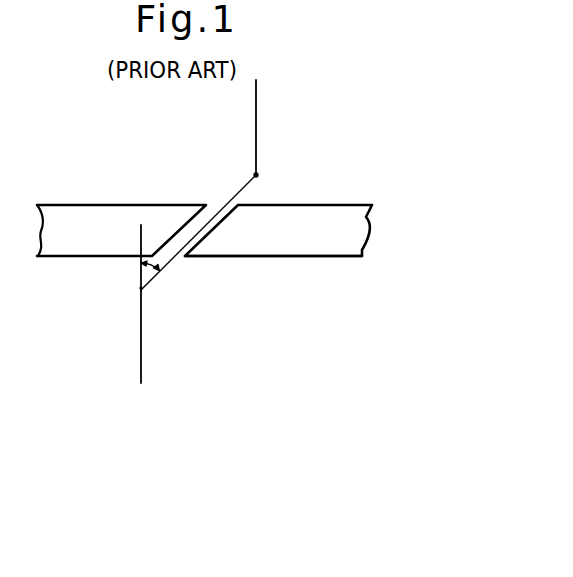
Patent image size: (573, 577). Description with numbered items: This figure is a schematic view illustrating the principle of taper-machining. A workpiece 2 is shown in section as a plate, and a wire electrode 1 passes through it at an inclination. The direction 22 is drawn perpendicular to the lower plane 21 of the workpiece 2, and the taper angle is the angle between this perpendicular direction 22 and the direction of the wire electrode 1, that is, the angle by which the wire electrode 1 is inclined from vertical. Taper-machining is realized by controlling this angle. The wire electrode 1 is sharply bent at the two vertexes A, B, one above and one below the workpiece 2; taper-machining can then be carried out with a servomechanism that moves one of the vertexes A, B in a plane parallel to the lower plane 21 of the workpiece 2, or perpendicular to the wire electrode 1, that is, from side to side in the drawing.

The wire electrode 1 is at (257, 105).
The workpiece 2 is at (353, 227).
The lower plane 21 is at (327, 257).
The direction perpendicular to the lower plane 22 is at (140, 347).
The vertex A is at (141, 287).
The vertex B is at (256, 175).